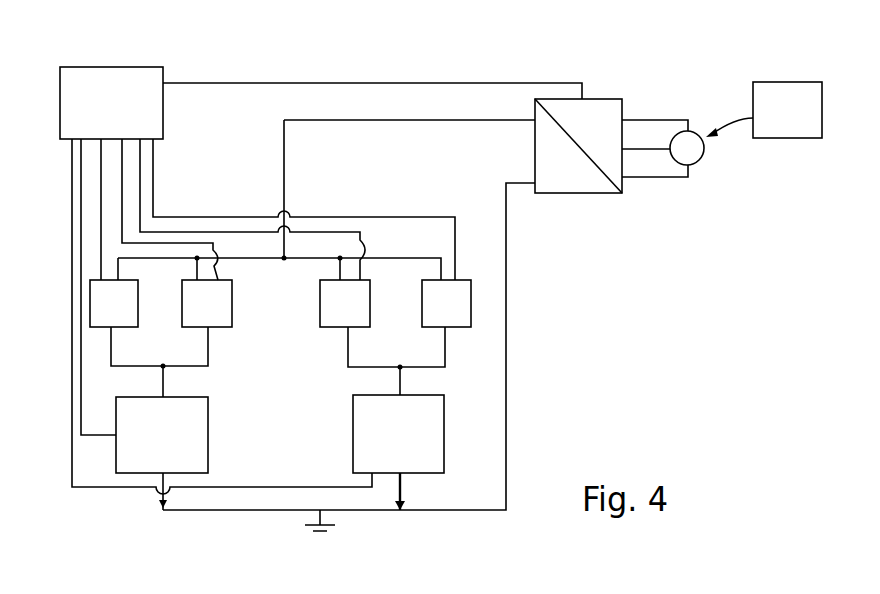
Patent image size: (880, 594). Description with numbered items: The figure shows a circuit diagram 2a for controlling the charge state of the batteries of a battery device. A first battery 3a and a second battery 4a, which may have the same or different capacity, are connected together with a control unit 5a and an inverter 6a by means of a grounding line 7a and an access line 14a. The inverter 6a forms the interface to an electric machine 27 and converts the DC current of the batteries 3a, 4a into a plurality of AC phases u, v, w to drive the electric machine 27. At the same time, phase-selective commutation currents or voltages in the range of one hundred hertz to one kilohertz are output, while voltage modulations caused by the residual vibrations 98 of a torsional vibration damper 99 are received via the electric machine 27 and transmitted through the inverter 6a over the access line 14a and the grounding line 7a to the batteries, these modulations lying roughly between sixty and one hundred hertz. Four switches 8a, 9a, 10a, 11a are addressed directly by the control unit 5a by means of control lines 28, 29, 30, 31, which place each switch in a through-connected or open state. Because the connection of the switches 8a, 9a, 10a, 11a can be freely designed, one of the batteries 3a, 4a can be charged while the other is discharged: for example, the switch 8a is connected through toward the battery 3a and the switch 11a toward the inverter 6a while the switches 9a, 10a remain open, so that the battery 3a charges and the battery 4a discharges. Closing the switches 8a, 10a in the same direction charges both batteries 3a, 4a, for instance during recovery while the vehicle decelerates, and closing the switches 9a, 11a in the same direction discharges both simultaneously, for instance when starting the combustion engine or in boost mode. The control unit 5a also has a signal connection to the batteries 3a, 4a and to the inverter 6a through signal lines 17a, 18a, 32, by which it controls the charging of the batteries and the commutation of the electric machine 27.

The circuit diagram 2a is at (662, 66).
The first battery 3a is at (162, 438).
The second battery 4a is at (398, 438).
The control unit 5a is at (111, 103).
The inverter 6a is at (591, 195).
The grounding line 7a is at (478, 512).
The switch 8a is at (149, 323).
The switch 9a is at (207, 303).
The switch 10a is at (382, 323).
The switch 11a is at (446, 303).
The access line 14a is at (420, 121).
The signal line 17a is at (72, 406).
The signal line 18a is at (93, 490).
The electric machine 27 is at (697, 163).
The control line 28 is at (100, 186).
The control line 29 is at (122, 234).
The control line 30 is at (178, 231).
The control line 31 is at (213, 216).
The signal line 32 is at (407, 82).
The residual vibrations 98 is at (727, 128).
The torsional vibration damper 99 is at (785, 130).